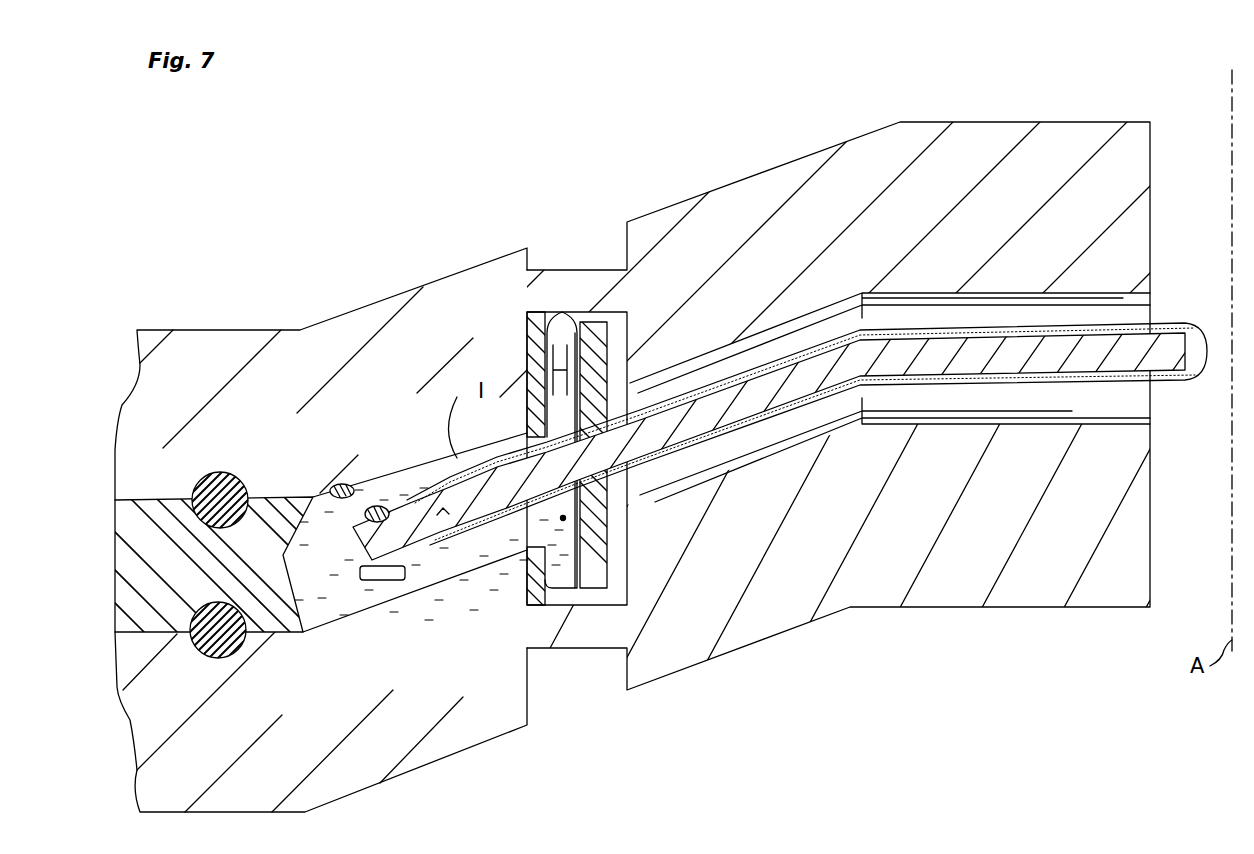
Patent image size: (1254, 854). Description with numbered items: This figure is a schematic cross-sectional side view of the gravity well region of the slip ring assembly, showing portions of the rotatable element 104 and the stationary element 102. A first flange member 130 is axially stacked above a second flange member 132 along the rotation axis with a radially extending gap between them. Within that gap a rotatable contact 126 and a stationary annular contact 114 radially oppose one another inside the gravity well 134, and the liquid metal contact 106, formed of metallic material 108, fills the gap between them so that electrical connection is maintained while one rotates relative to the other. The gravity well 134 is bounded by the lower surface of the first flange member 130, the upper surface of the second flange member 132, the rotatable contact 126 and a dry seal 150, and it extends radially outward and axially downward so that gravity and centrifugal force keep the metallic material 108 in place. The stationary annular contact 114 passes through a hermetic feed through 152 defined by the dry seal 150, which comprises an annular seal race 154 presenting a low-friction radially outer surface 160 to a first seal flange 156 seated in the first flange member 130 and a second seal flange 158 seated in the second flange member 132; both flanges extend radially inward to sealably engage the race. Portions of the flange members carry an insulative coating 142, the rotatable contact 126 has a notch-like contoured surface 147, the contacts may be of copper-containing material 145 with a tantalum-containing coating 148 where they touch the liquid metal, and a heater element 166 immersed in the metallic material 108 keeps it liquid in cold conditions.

The stationary element 102 is at (1166, 396).
The rotatable element 104 is at (446, 252).
The liquid metal contact 106 is at (342, 612).
The metallic material 108 is at (312, 620).
The stationary annular contact 114 is at (1166, 350).
The rotatable contact 126 is at (135, 530).
The first flange member 130 is at (912, 150).
The second flange member 132 is at (866, 582).
The gravity well 134 is at (352, 558).
The insulative coating 142 is at (334, 486).
The copper-containing material 145 is at (443, 508).
The contoured surface 147 is at (283, 557).
The tantalum-containing coating 148 is at (380, 490).
The dry seal 150 is at (590, 268).
The hermetic feed through 152 is at (612, 492).
The annular seal race 154 is at (613, 355).
The first seal flange 156 is at (541, 311).
The second seal flange 158 is at (552, 345).
The radially outer surface 160 is at (563, 518).
The heater element 166 is at (388, 582).